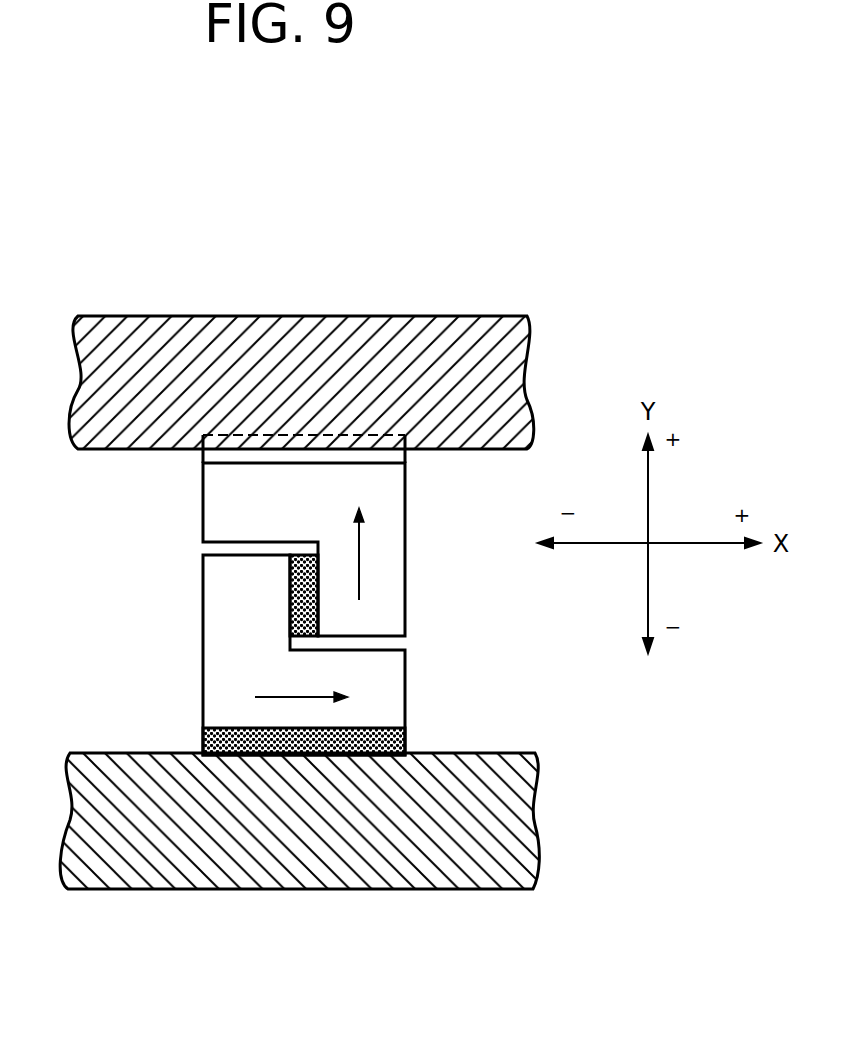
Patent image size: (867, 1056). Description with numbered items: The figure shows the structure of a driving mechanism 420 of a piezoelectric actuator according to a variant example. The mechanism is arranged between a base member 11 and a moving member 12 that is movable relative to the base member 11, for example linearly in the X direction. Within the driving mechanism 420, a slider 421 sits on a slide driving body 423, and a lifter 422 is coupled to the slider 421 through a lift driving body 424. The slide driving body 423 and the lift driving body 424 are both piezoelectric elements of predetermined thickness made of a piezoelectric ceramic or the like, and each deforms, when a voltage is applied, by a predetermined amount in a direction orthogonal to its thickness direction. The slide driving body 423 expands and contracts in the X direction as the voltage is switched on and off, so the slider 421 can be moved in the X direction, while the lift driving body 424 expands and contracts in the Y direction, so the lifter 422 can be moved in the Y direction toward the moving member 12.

The base member 11 is at (88, 818).
The moving member 12 is at (105, 380).
The driving mechanism 420 is at (322, 470).
The slider 421 is at (186, 588).
The lifter 422 is at (411, 485).
The slide driving body 423 is at (407, 738).
The lift driving body 424 is at (303, 573).